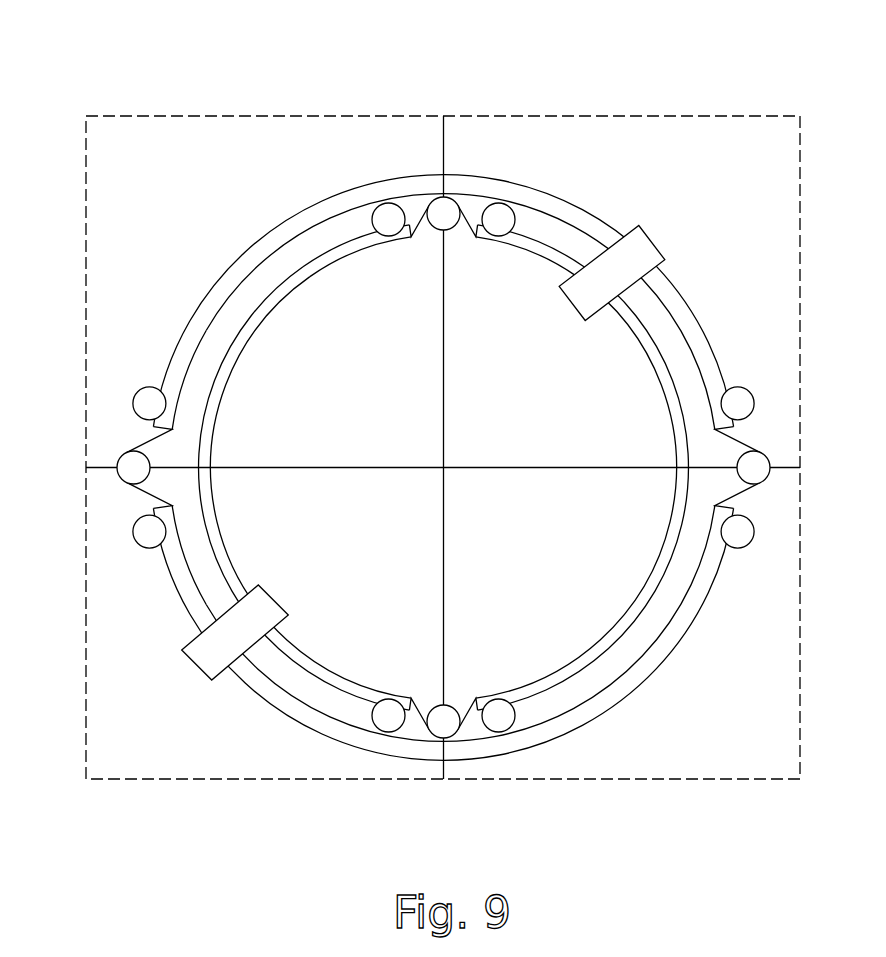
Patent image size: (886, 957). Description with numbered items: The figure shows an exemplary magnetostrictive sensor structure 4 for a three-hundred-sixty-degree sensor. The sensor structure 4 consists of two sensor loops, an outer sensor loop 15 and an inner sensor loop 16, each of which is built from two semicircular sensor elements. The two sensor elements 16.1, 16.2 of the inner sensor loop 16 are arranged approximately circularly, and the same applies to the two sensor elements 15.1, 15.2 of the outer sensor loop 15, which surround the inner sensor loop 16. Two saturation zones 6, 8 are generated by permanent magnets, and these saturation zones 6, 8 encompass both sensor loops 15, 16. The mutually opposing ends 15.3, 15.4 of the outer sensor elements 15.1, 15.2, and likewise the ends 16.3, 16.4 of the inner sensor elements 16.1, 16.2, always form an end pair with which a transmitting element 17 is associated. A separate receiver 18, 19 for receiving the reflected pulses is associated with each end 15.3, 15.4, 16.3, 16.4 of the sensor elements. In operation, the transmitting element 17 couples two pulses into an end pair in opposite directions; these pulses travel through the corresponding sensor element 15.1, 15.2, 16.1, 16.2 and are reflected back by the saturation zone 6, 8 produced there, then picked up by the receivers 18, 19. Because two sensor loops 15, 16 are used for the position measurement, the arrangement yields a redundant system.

The magnetostrictive sensor structure 4 is at (212, 114).
The saturation zone 6 is at (656, 239).
The saturation zone 8 is at (207, 660).
The outer sensor loop 15 is at (388, 478).
The sensor element 15.1 is at (325, 210).
The sensor element 15.2 is at (287, 705).
The end of sensor element 15.3 is at (175, 347).
The end of sensor element 15.4 is at (173, 582).
The inner sensor loop 16 is at (444, 434).
The sensor element 16.1 is at (272, 310).
The sensor element 16.2 is at (568, 660).
The end of sensor element 16.3 is at (345, 250).
The end of sensor element 16.4 is at (530, 233).
The transmitting element 17 is at (764, 450).
The receiver 18 is at (736, 385).
The receiver 19 is at (755, 530).